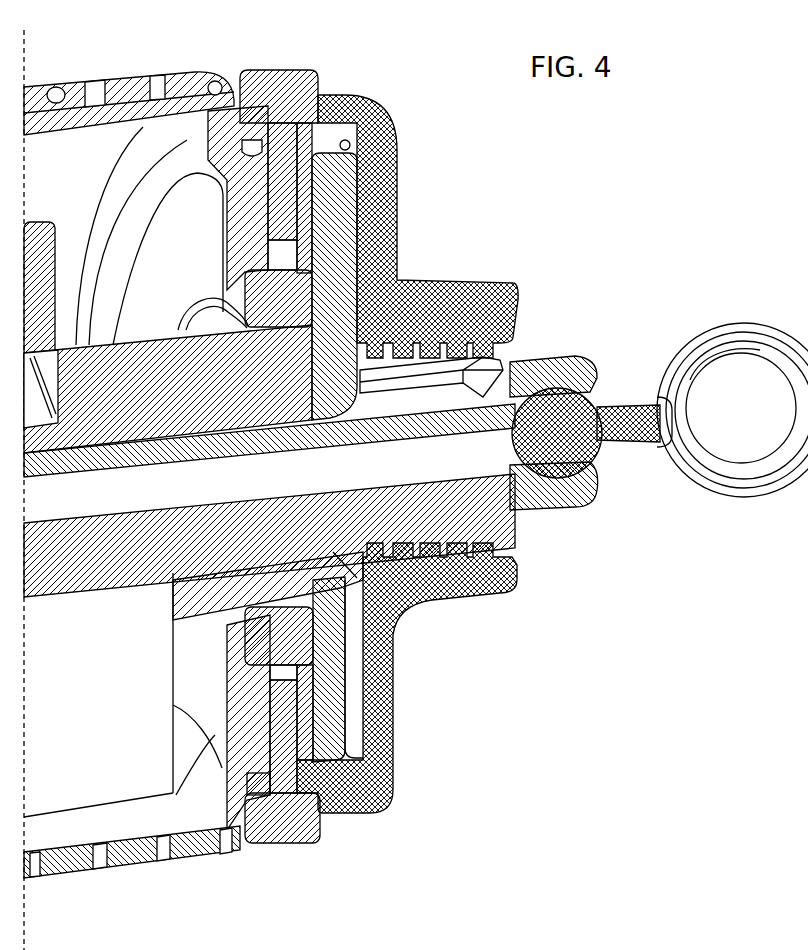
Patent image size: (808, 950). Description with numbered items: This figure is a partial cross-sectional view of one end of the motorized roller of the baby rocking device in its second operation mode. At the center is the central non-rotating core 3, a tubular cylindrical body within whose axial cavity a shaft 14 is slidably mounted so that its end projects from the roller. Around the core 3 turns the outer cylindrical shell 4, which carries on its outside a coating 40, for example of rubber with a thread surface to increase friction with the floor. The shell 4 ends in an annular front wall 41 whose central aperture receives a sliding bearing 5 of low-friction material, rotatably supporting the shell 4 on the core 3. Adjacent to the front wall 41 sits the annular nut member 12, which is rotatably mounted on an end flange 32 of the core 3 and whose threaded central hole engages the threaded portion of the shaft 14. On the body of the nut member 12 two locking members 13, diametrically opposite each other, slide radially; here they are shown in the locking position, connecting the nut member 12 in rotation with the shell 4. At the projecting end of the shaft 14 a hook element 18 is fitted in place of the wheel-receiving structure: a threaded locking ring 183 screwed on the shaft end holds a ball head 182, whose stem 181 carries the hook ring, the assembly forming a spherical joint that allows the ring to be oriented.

The central non-rotating core 3 is at (141, 336).
The outer cylindrical shell 4 is at (107, 838).
The sliding bearing 5 is at (233, 308).
The nut member 12 is at (398, 188).
The locking member 13 is at (318, 84).
The shaft 14 is at (460, 598).
The hook element 18 is at (640, 378).
The end flange 32 is at (340, 262).
The coating 40 is at (182, 868).
The annular front wall 41 is at (232, 752).
The stem 181 is at (622, 442).
The ball head 182 is at (578, 502).
The threaded locking ring 183 is at (590, 358).